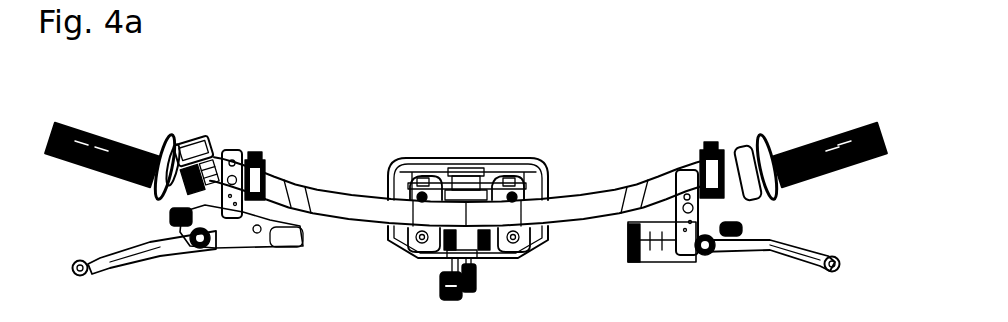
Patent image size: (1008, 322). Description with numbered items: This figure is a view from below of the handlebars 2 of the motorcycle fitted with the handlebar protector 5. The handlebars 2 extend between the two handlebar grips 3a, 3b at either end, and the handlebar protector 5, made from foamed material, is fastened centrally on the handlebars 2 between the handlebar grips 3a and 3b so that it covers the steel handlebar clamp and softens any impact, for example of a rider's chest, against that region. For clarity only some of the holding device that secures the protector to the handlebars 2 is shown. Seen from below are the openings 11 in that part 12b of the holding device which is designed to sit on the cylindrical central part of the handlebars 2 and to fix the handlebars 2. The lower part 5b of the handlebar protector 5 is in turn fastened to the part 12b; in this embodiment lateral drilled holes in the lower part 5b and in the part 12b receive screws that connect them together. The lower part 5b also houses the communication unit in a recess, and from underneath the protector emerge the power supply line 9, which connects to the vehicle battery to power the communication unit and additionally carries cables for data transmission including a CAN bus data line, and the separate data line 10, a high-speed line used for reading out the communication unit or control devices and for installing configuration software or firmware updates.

The handlebars 2 is at (299, 200).
The handlebar grip 3a is at (856, 163).
The handlebar grip 3b is at (88, 163).
The handlebar protector 5 is at (483, 131).
The lower part of the handlebar protector 5b is at (440, 163).
The part of the holding device 12b is at (506, 185).
The openings 11 is at (411, 240).
The power supply line 9 is at (452, 262).
The data line 10 is at (474, 262).